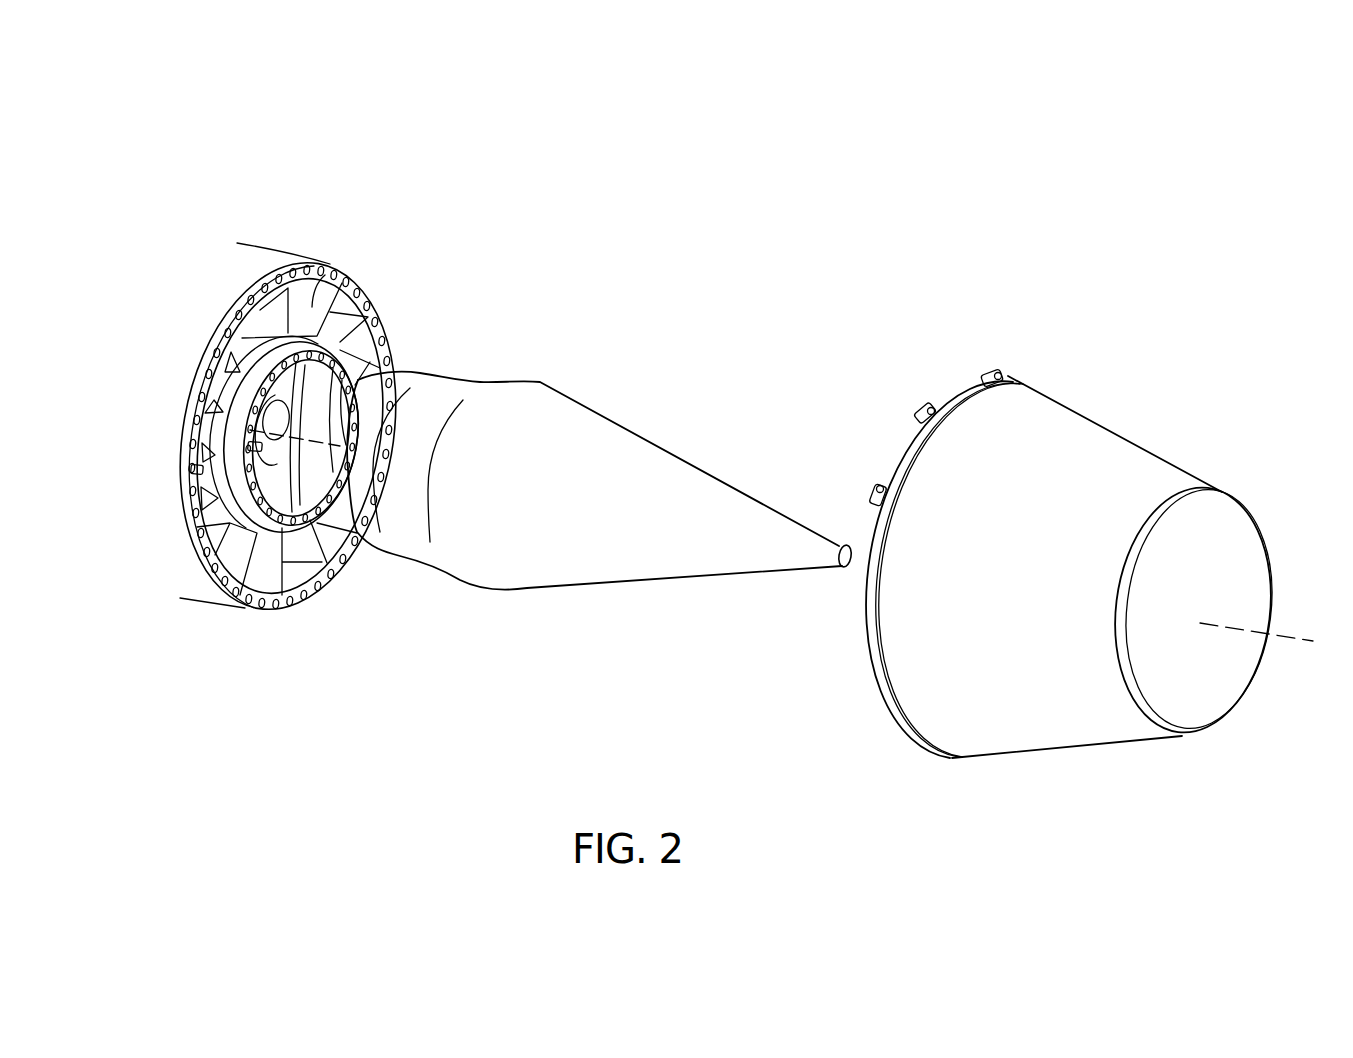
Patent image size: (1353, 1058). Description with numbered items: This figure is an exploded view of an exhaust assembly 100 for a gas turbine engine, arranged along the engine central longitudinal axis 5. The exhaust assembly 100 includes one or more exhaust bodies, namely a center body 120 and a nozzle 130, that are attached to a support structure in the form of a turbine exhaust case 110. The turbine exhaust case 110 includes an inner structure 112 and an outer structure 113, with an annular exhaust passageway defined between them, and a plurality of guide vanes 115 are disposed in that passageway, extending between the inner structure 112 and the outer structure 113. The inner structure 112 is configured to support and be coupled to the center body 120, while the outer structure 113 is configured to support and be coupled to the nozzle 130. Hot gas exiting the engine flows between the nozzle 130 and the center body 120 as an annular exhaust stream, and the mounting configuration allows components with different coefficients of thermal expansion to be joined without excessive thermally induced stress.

The exhaust assembly 100 is at (146, 134).
The turbine exhaust case 110 is at (283, 216).
The inner structure 112 is at (328, 572).
The outer structure 113 is at (250, 607).
The guide vanes 115 is at (362, 380).
The center body 120 is at (589, 318).
The nozzle 130 is at (1086, 333).
The engine central longitudinal axis 5 is at (862, 558).